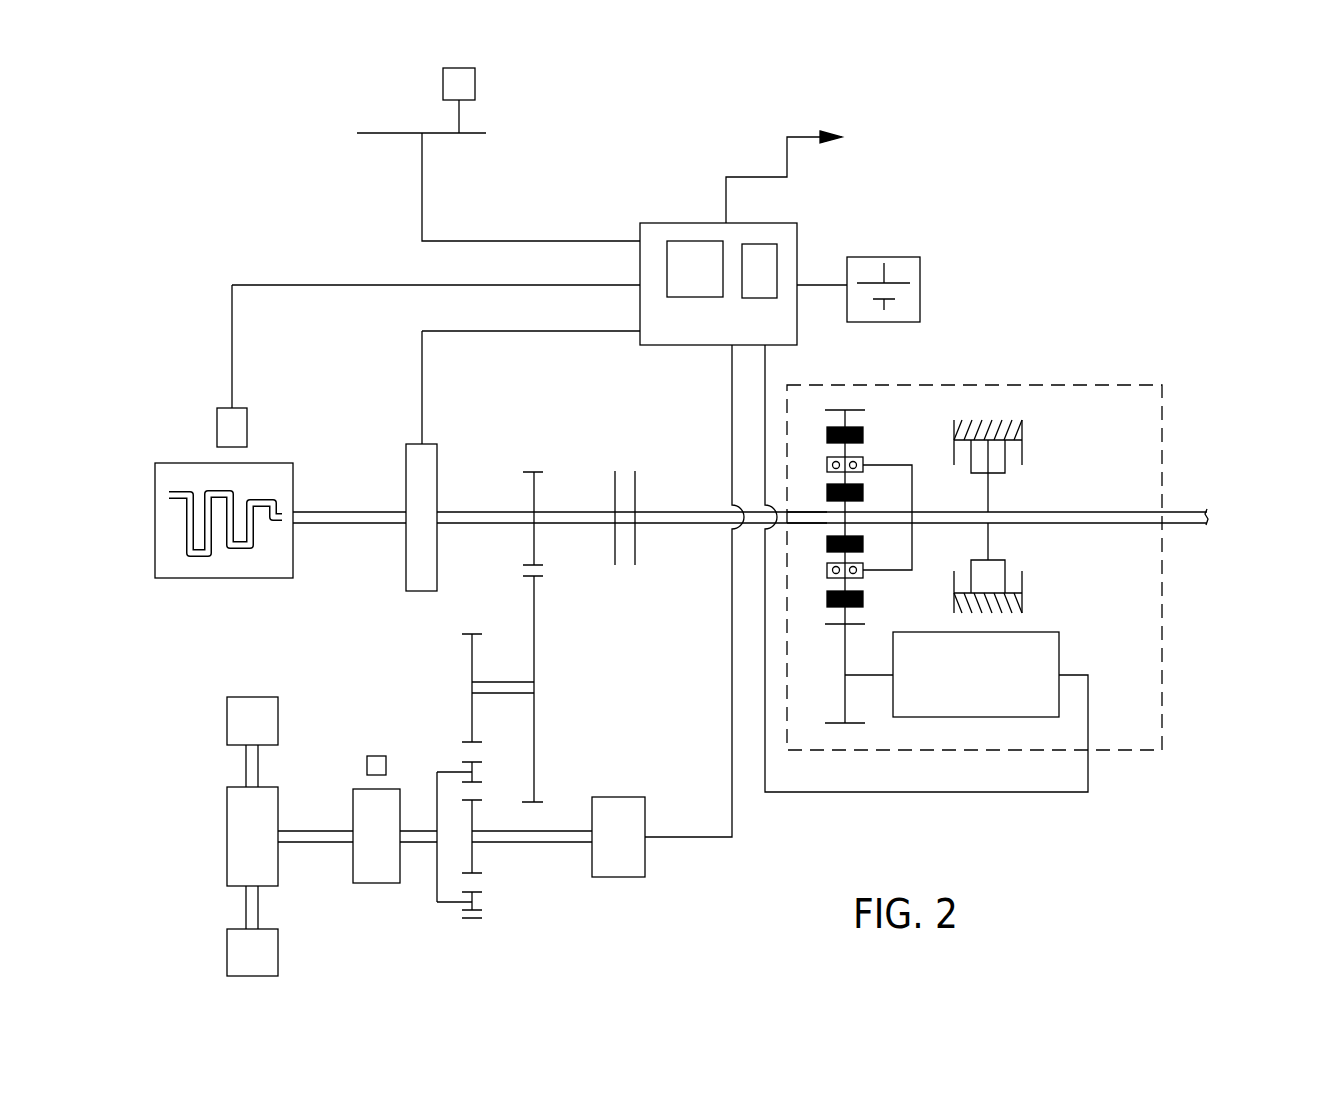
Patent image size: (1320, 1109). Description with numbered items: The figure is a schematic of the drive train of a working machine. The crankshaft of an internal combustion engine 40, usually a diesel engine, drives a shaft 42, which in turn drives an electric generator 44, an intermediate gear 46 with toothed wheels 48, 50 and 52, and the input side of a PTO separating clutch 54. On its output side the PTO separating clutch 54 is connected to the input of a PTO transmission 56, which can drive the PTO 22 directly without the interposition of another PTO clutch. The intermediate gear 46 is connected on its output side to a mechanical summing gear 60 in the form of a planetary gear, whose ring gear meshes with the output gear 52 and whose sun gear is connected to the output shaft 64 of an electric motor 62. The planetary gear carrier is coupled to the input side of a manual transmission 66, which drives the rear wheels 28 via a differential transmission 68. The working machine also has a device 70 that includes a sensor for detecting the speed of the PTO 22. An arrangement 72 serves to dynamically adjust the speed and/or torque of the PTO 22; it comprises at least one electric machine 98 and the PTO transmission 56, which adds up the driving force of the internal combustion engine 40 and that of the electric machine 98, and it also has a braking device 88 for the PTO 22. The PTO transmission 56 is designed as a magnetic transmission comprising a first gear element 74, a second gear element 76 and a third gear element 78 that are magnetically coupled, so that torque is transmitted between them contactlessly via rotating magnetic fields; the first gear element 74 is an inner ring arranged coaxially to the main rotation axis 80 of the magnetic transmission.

The PTO 22 is at (1188, 522).
The rear wheels 28 is at (255, 720).
The internal combustion engine 40 is at (215, 562).
The shaft 42 is at (344, 515).
The electric generator 44 is at (423, 478).
The intermediate gear 46 is at (572, 609).
The toothed wheel 48 is at (534, 490).
The toothed wheel 50 is at (534, 742).
The output gear 52 is at (470, 655).
The PTO separating clutch 54 is at (635, 487).
The PTO transmission 56 is at (853, 524).
The mechanical summing gear 60 is at (503, 935).
The electric motor 62 is at (615, 847).
The output shaft 64 is at (565, 835).
The manual transmission 66 is at (368, 860).
The differential transmission 68 is at (258, 846).
The device 70 is at (655, 223).
The arrangement 72 is at (1119, 372).
The first gear element 74 is at (866, 490).
The second gear element 76 is at (228, 428).
The third gear element 78 is at (858, 430).
The main rotation axis 80 is at (808, 515).
The braking device 88 is at (1000, 458).
The electric machine 98 is at (1020, 672).